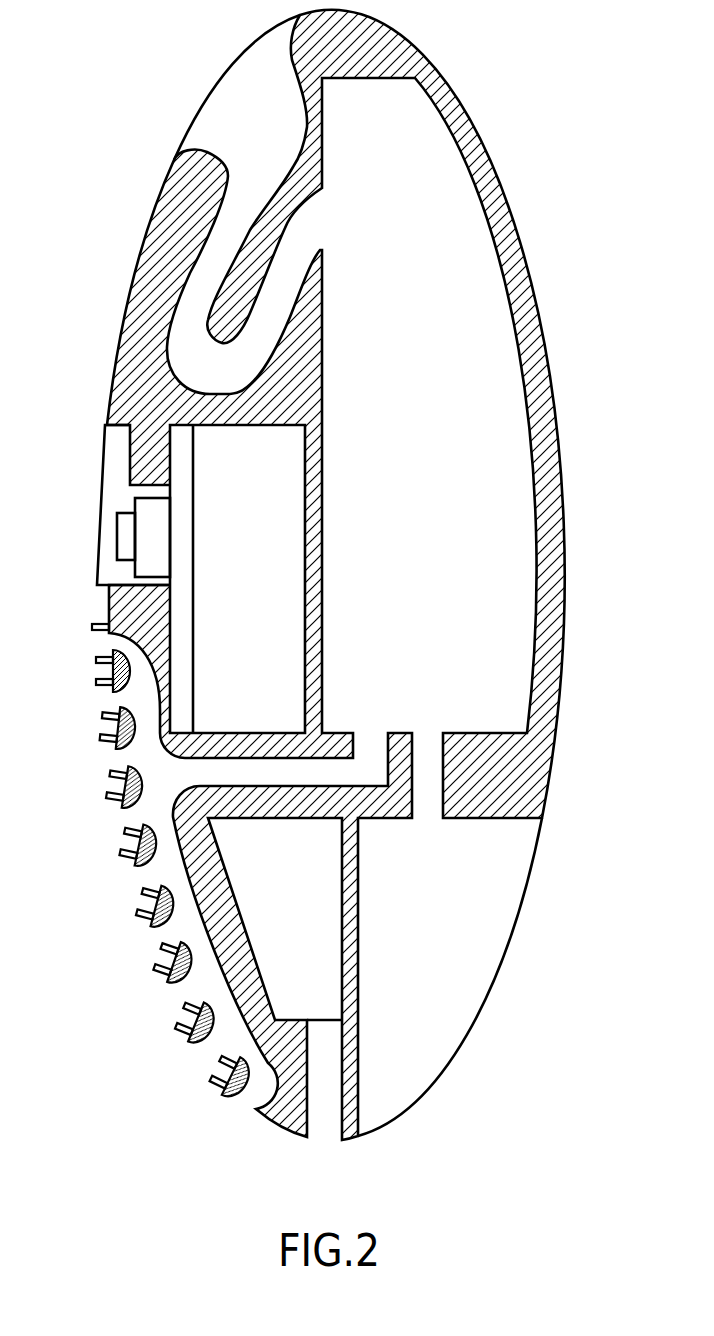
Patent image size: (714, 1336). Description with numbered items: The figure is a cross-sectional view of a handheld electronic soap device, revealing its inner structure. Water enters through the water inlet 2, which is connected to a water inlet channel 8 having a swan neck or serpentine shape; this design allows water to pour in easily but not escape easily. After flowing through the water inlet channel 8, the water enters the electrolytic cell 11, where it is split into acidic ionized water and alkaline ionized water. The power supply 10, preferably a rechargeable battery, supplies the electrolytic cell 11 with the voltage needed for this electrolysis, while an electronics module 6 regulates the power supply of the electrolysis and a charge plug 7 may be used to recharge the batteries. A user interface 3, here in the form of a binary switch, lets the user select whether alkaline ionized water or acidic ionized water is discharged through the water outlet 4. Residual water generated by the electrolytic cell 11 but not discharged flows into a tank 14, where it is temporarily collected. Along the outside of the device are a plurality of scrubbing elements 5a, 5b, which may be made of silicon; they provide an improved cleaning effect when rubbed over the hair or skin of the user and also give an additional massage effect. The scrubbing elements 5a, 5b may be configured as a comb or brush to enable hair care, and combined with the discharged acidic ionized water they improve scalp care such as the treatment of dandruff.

The water inlet 2 is at (235, 103).
The user interface 3 is at (150, 540).
The water outlet 4 is at (187, 993).
The scrubbing element 5a is at (102, 729).
The scrubbing element 5b is at (108, 787).
The electronics module 6 is at (293, 1000).
The charge plug 7 is at (328, 1117).
The water inlet channel 8 is at (185, 350).
The power supply 10 is at (217, 605).
The electrolytic cell 11 is at (510, 537).
The tank 14 is at (495, 899).